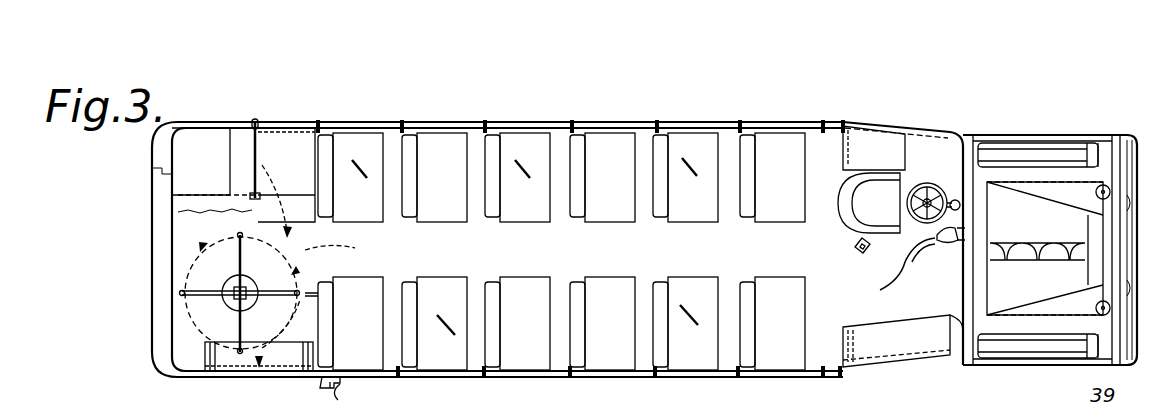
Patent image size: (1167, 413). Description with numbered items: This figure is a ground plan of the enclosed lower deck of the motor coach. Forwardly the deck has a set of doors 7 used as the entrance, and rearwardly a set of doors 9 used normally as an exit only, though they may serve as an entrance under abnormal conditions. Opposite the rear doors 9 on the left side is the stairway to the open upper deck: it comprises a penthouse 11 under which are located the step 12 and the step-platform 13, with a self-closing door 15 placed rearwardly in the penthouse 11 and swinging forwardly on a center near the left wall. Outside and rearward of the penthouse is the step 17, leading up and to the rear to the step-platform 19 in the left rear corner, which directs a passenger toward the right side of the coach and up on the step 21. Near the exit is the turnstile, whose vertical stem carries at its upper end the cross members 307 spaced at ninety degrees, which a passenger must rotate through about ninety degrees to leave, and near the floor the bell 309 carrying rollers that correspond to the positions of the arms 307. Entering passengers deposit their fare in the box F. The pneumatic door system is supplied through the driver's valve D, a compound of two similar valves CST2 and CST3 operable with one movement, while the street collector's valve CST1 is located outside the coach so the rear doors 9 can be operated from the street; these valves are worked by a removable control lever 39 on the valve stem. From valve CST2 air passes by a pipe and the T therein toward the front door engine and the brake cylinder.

The step 17 is at (240, 165).
The self-closing door 15 is at (246, 148).
The penthouse 11 is at (275, 147).
The step-platform 13 is at (293, 160).
The step-platform 19 is at (198, 163).
The step 21 is at (190, 204).
The step 12 is at (320, 218).
The cross members 307 is at (243, 268).
The bell 309 is at (242, 293).
The element T is at (218, 308).
The doors 9 is at (248, 372).
The control lever 39 is at (356, 398).
The street collector's valve CST1 is at (338, 388).
The box F is at (870, 252).
The valve CST2 is at (922, 258).
The valve CST3 is at (955, 237).
The driver's valve D is at (968, 270).
The doors 7 is at (914, 366).